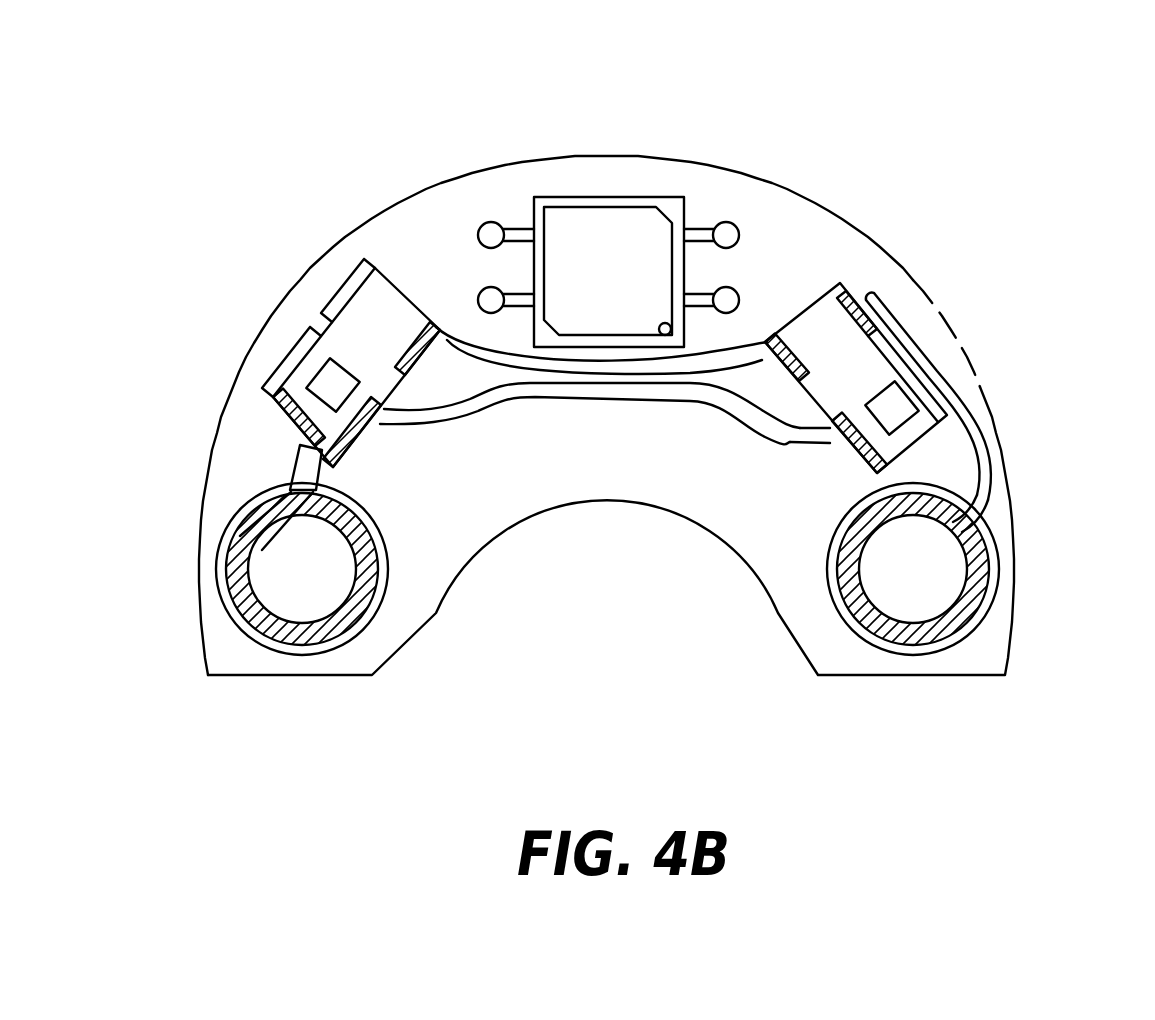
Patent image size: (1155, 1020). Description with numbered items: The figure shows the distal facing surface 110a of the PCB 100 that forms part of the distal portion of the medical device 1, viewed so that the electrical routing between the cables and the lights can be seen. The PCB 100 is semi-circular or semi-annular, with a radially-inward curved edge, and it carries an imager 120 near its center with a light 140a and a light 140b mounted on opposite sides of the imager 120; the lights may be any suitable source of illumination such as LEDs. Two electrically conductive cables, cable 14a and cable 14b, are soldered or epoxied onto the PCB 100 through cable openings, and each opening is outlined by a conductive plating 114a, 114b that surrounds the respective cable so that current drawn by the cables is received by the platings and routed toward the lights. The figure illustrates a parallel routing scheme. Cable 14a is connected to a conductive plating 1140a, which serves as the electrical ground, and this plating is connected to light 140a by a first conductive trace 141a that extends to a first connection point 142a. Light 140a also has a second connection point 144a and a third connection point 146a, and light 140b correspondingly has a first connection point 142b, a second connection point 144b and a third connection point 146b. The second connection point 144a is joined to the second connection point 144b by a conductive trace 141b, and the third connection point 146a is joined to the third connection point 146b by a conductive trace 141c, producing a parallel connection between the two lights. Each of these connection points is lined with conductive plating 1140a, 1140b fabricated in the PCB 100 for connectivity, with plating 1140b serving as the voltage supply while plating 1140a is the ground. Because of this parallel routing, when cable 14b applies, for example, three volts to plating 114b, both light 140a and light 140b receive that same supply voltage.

The medical device 1 is at (300, 150).
The PCB 100 is at (852, 660).
The distal facing surface 110a is at (763, 200).
The imager 120 is at (638, 178).
The light 140a is at (327, 316).
The light 140b is at (910, 353).
The first conductive trace 141a is at (303, 478).
The conductive trace 141b is at (462, 335).
The conductive trace 141c is at (612, 400).
The first connection point 142a is at (308, 445).
The first connection point 142b is at (897, 318).
The second connection point 144a is at (380, 425).
The second connection point 144b is at (833, 440).
The third connection point 146a is at (433, 326).
The third connection point 146b is at (848, 297).
The cable 14a is at (243, 567).
The cable 14b is at (975, 525).
The conductive plating 114a is at (243, 598).
The conductive plating 114b is at (973, 602).
The conductive plating 1140a is at (278, 404).
The conductive plating 1140b is at (845, 462).